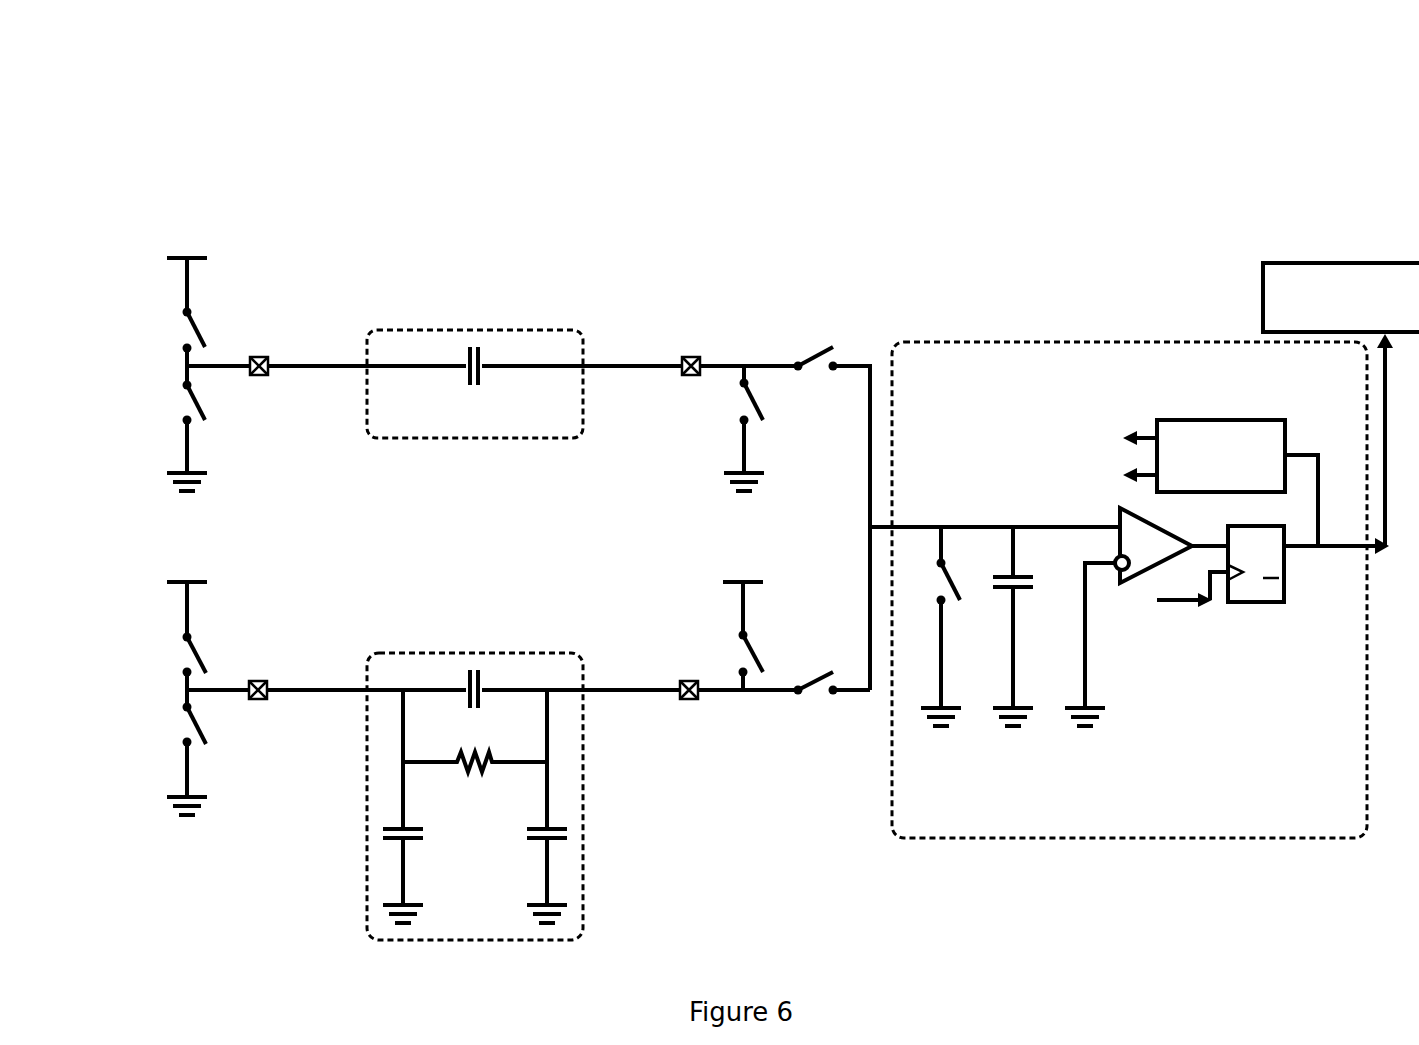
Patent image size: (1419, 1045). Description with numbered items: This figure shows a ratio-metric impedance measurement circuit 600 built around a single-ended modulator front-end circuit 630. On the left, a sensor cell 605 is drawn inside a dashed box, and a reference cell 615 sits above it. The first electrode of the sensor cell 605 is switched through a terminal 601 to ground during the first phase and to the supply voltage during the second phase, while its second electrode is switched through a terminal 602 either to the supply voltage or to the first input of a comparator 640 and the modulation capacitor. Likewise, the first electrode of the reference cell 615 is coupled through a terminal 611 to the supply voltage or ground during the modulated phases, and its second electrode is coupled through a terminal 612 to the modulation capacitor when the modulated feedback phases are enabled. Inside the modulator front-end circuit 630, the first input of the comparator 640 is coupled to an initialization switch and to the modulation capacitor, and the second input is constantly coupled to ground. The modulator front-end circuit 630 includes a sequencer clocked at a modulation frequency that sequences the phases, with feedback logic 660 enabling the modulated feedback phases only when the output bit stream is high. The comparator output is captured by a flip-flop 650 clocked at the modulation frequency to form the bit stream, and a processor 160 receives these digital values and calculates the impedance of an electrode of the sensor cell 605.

The ratio-metric impedance measurement circuit 600 is at (116, 201).
The terminal 601 is at (258, 705).
The terminal 602 is at (690, 705).
The sensor cell 605 is at (475, 817).
The terminal 611 is at (259, 351).
The terminal 612 is at (689, 351).
The reference cell 615 is at (475, 404).
The single-ended modulator front-end circuit 630 is at (1131, 586).
The comparator 640 is at (1153, 545).
The flip-flop 650 is at (1284, 580).
The feedback logic 660 is at (1175, 483).
The processor 160 is at (1341, 297).